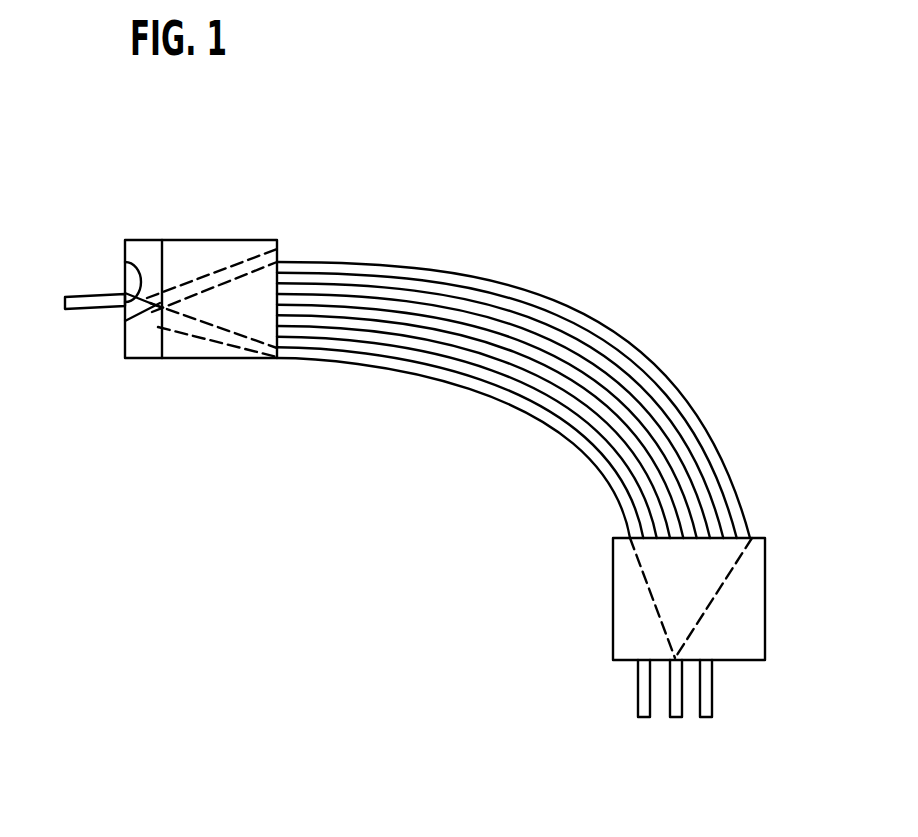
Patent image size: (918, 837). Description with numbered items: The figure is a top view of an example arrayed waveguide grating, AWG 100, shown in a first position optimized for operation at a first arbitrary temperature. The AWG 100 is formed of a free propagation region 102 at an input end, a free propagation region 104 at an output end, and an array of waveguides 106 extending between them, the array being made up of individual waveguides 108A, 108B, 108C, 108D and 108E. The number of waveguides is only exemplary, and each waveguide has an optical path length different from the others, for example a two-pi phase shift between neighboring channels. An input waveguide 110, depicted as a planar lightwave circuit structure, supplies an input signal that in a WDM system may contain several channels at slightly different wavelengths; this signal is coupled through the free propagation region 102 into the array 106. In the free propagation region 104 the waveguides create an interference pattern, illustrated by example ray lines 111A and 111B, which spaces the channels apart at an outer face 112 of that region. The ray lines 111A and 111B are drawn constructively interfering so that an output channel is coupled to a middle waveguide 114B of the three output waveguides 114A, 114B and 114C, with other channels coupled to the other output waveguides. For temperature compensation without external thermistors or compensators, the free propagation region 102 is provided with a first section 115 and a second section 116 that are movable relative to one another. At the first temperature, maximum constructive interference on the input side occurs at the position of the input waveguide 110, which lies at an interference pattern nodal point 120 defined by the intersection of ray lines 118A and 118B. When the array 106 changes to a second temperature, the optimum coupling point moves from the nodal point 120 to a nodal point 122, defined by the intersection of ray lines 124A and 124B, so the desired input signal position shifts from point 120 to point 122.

The arrayed waveguide grating 100 is at (630, 199).
The free propagation region 102 is at (213, 287).
The free propagation region 104 is at (688, 661).
The array of waveguides 106 is at (558, 394).
The waveguide 108A is at (747, 525).
The waveguide 108B is at (703, 468).
The waveguide 108C is at (598, 412).
The waveguide 108D is at (607, 460).
The waveguide 108E is at (615, 505).
The input waveguide 110 is at (80, 311).
The ray line 111A is at (662, 628).
The ray line 111B is at (713, 605).
The outer face 112 is at (733, 662).
The output waveguide 114A is at (643, 718).
The middle waveguide 114B is at (676, 718).
The output waveguide 114C is at (707, 718).
The first section 115 is at (133, 360).
The second section 116 is at (277, 240).
The ray line 118A is at (277, 256).
The ray line 118B is at (245, 348).
The interference pattern nodal point 120 is at (125, 266).
The nodal point 122 is at (152, 319).
The ray line 124A is at (223, 285).
The ray line 124B is at (197, 338).